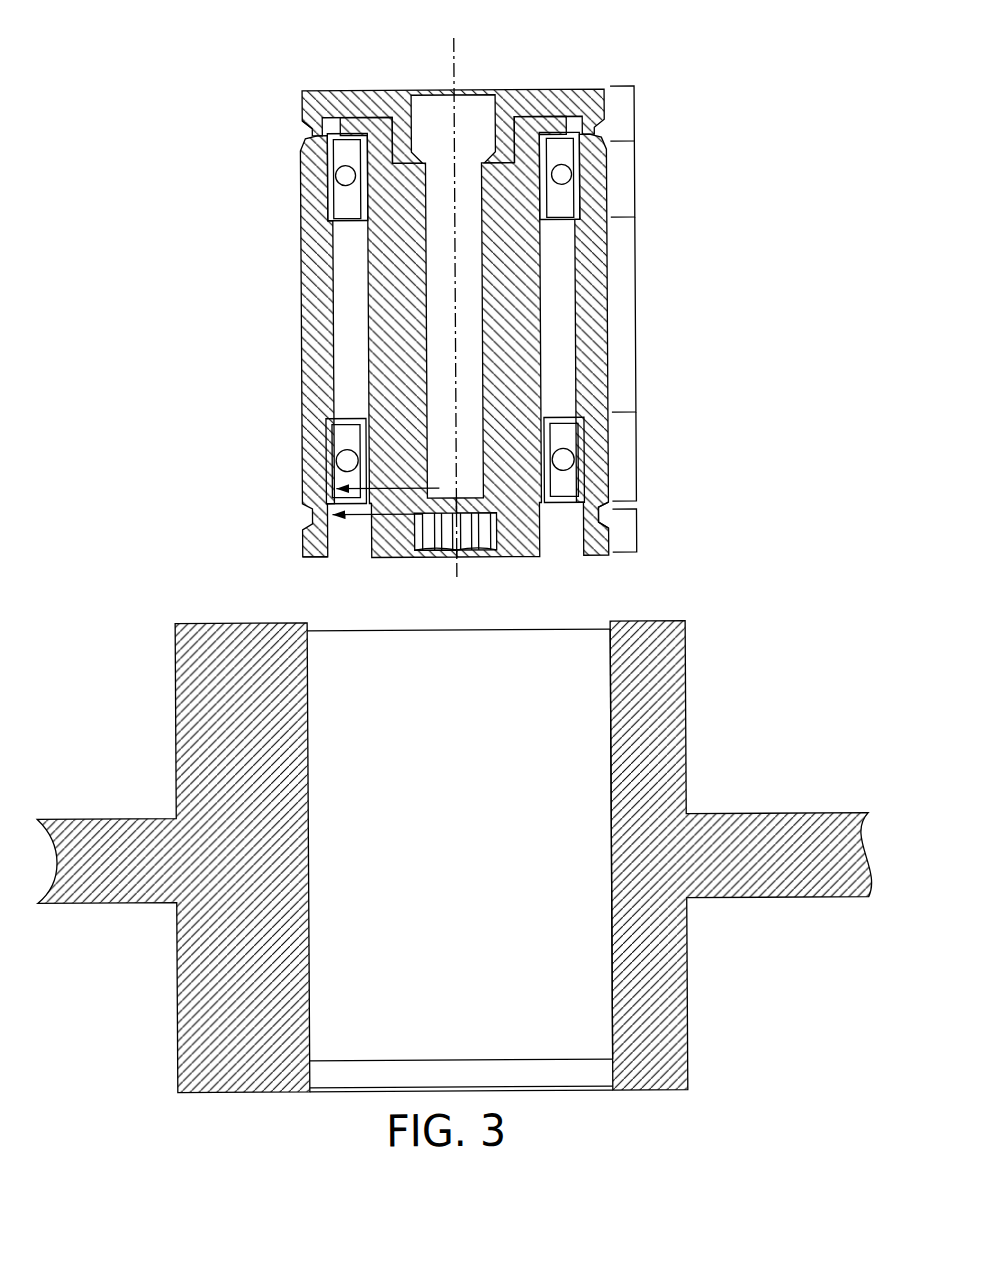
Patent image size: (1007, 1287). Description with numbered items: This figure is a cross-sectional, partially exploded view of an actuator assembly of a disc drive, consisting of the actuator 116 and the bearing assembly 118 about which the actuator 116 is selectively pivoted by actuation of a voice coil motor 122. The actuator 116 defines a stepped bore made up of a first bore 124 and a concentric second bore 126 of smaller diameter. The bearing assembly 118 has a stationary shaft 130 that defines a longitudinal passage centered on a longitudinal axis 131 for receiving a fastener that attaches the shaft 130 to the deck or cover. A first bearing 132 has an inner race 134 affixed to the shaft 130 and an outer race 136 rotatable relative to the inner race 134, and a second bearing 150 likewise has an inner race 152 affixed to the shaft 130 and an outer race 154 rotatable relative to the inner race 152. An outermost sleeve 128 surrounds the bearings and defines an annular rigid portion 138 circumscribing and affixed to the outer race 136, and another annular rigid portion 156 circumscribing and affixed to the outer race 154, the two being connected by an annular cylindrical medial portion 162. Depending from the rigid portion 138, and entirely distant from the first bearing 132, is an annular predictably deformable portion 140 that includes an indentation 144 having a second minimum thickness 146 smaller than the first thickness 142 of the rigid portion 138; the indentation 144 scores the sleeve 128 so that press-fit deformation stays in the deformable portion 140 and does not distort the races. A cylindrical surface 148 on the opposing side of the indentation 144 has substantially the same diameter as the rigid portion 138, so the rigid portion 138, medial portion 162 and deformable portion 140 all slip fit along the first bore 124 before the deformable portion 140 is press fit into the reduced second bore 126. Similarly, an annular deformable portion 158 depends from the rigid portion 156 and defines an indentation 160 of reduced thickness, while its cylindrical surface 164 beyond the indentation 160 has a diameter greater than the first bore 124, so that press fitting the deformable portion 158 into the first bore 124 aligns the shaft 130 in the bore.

The actuator 116 is at (454, 842).
The bearing assembly 118 is at (448, 313).
The voice coil motor 122 is at (752, 691).
The first bore 124 is at (610, 735).
The second bore 126 is at (611, 1077).
The outermost sleeve 128 is at (607, 285).
The stationary shaft 130 is at (541, 557).
The longitudinal axis 131 is at (461, 77).
The first bearing 132 is at (388, 424).
The inner race 134 is at (366, 417).
The outer race 136 is at (328, 416).
The annular rigid portion 138 is at (637, 458).
The annular predictably deformable portion 140 is at (639, 522).
The first thickness 142 is at (303, 488).
The indentation 144 is at (608, 518).
The second minimum thickness 146 is at (314, 514).
The cylindrical surface 148 is at (305, 537).
The bearing 150 is at (380, 197).
The inner race 152 is at (369, 221).
The outer race 154 is at (362, 224).
The annular rigid portion 156 is at (637, 190).
The annular deformable portion 158 is at (637, 121).
The indentation 160 is at (300, 127).
The annular cylindrical medial portion 162 is at (637, 328).
The cylindrical surface 164 is at (305, 96).